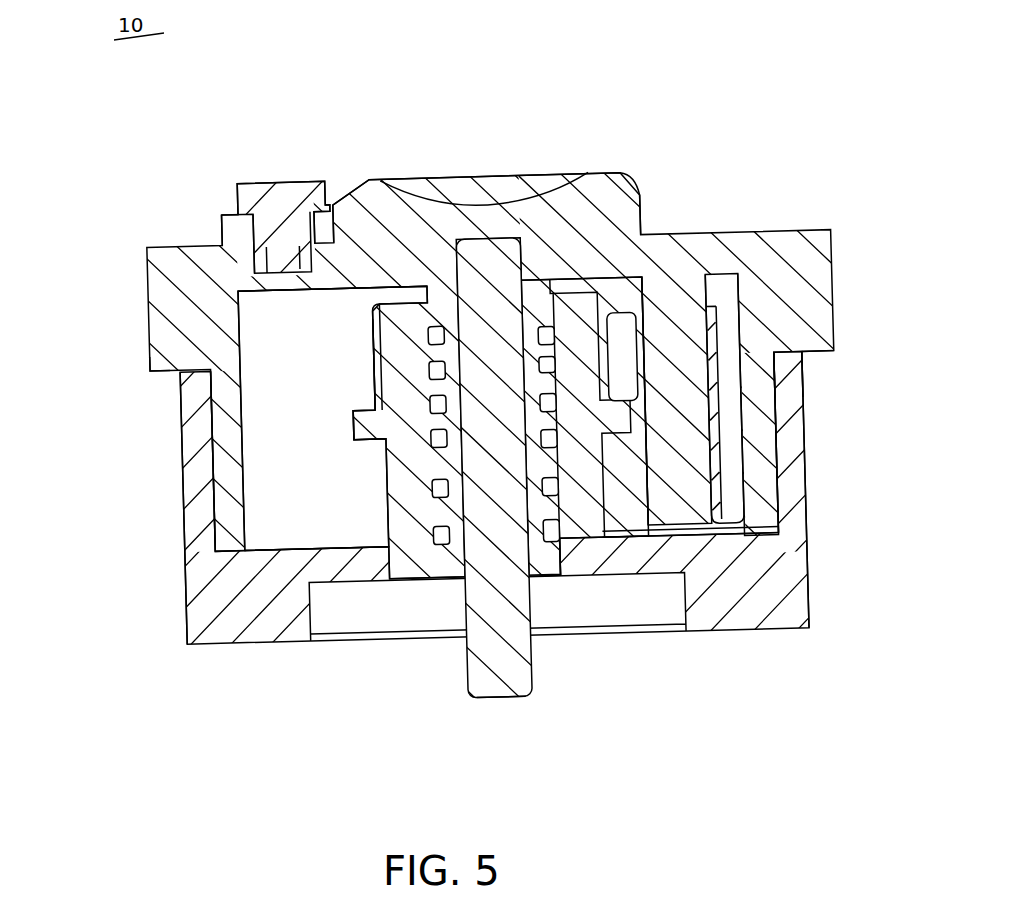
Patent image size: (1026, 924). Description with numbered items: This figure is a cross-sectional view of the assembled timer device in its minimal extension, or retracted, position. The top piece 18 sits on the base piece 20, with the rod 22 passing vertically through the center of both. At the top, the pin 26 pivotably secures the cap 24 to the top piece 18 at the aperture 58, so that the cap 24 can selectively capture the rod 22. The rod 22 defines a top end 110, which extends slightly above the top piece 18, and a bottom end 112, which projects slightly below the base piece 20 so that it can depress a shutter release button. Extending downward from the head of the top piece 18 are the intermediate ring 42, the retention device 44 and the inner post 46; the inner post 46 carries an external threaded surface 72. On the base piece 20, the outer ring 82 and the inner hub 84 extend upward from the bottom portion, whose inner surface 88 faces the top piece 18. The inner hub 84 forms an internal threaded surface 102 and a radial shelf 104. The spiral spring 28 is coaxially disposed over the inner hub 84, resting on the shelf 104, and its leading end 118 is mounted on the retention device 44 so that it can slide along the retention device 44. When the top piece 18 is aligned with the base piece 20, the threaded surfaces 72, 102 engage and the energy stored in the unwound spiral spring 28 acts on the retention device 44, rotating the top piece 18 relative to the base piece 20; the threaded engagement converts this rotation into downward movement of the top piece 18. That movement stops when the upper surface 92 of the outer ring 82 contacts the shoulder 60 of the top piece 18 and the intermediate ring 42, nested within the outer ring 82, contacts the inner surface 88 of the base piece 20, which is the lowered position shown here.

The top piece 18 is at (148, 308).
The base piece 20 is at (206, 599).
The rod 22 is at (474, 667).
The cap 24 is at (630, 192).
The pin 26 is at (264, 188).
The spiral spring 28 is at (612, 304).
The intermediate ring 42 is at (758, 437).
The retention device 44 is at (692, 286).
The inner post 46 is at (541, 516).
The aperture 58 is at (222, 262).
The shoulder 60 is at (158, 374).
The threaded surface 72 is at (430, 297).
The outer ring 82 is at (200, 478).
The inner hub 84 is at (391, 472).
The inner surface 88 is at (275, 556).
The upper surface 92 is at (800, 352).
The threaded surface 102 is at (445, 342).
The shelf 104 is at (355, 425).
The top end 110 is at (580, 176).
The bottom end 112 is at (498, 692).
The leading end 118 is at (804, 372).